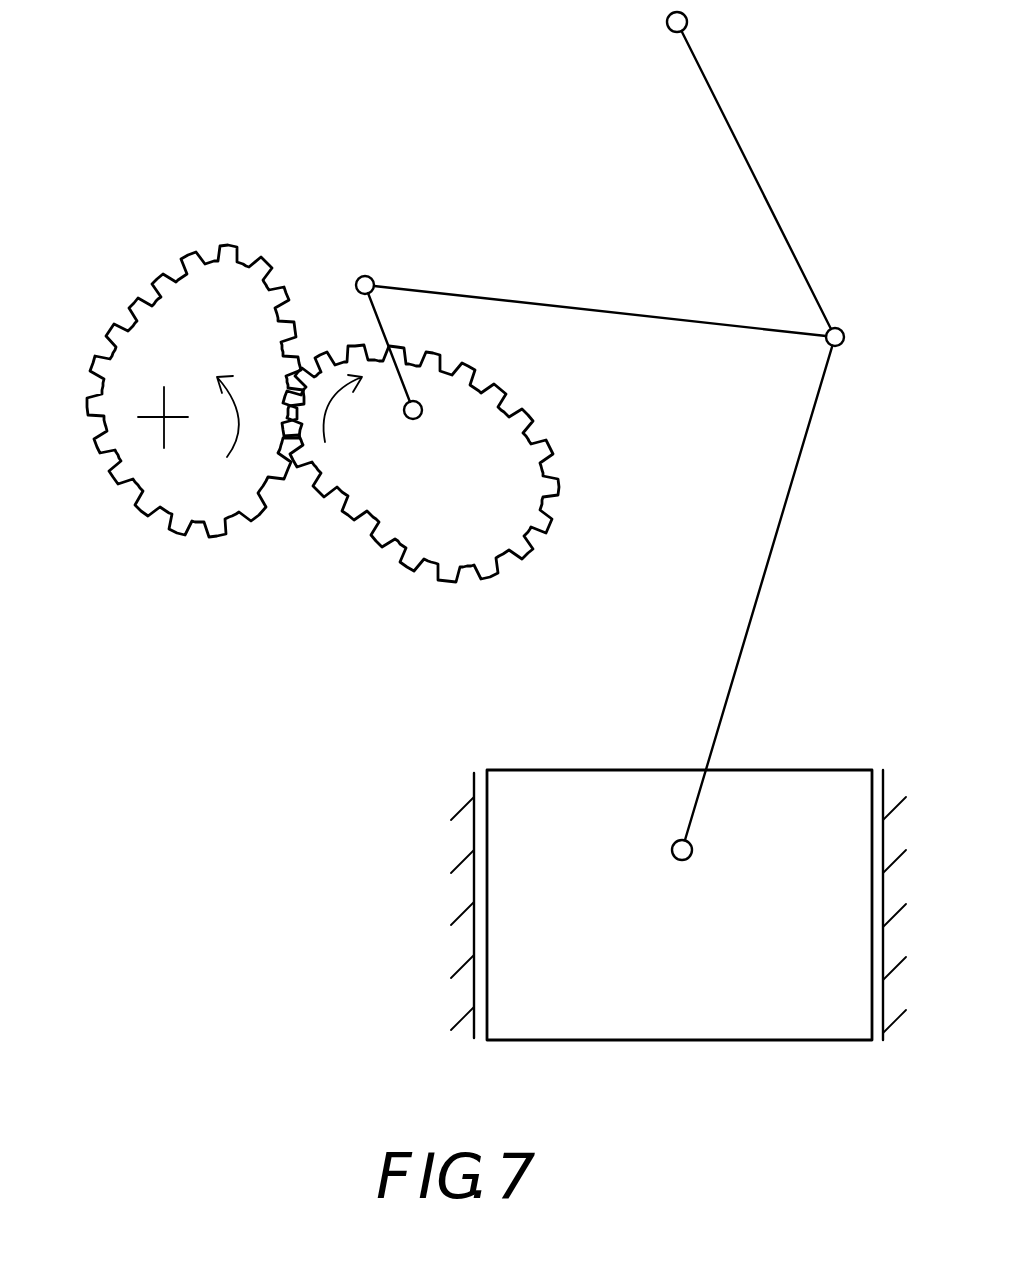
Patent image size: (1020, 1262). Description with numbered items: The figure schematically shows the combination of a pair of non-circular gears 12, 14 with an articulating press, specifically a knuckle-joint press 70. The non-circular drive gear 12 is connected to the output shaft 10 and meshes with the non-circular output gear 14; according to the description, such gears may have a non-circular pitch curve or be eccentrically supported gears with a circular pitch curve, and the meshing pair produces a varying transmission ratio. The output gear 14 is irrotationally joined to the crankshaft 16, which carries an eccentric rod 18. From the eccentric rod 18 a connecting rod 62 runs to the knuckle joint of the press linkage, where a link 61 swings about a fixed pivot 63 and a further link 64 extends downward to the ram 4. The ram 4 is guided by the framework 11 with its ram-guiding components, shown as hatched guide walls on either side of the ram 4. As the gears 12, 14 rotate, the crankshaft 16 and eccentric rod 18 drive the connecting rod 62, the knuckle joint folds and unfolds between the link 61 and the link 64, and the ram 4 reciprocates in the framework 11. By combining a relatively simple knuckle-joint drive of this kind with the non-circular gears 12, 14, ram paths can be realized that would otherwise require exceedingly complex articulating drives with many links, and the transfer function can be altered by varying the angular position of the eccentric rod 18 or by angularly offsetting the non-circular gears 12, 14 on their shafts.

The ram 4 is at (718, 927).
The output shaft 10 is at (158, 408).
The framework 11 is at (465, 912).
The non-circular drive gear 12 is at (172, 317).
The non-circular output gear 14 is at (507, 490).
The crankshaft 16 is at (412, 427).
The eccentric rod 18 is at (372, 317).
The link of the knuckle-joint drive 61 is at (747, 152).
The connecting rod of the knuckle-joint drive 62 is at (522, 300).
The fixed pivot 63 is at (668, 31).
The link to the ram 64 is at (787, 507).
The knuckle-joint press 70 is at (348, 80).